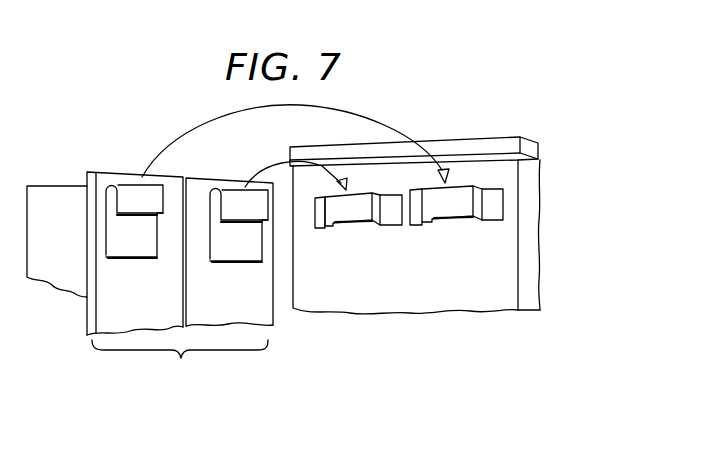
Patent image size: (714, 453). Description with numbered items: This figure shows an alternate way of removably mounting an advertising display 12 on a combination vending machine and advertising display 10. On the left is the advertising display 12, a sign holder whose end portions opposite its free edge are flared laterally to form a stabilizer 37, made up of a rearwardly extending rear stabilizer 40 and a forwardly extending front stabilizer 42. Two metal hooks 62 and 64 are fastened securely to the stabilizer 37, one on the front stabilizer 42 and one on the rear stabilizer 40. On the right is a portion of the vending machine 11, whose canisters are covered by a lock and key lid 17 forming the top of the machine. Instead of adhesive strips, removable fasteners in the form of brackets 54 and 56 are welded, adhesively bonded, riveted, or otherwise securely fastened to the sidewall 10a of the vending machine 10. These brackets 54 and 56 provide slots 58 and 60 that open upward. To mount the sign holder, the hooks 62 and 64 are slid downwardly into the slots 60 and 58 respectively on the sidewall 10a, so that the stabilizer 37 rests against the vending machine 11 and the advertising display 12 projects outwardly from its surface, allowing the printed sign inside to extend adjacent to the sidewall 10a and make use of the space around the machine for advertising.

The combination vending machine and advertising display 10 is at (475, 97).
The sidewall 10a is at (428, 310).
The vending machine 11 is at (445, 140).
The advertising display 12 is at (57, 183).
The lock and key lid 17 is at (502, 138).
The stabilizer 37 is at (180, 364).
The rear stabilizer 40 is at (198, 188).
The front stabilizer 42 is at (100, 180).
The bracket 54 is at (323, 233).
The bracket 56 is at (490, 225).
The slot 58 is at (363, 225).
The slot 60 is at (455, 218).
The metal hook 62 is at (137, 205).
The metal hook 64 is at (245, 205).